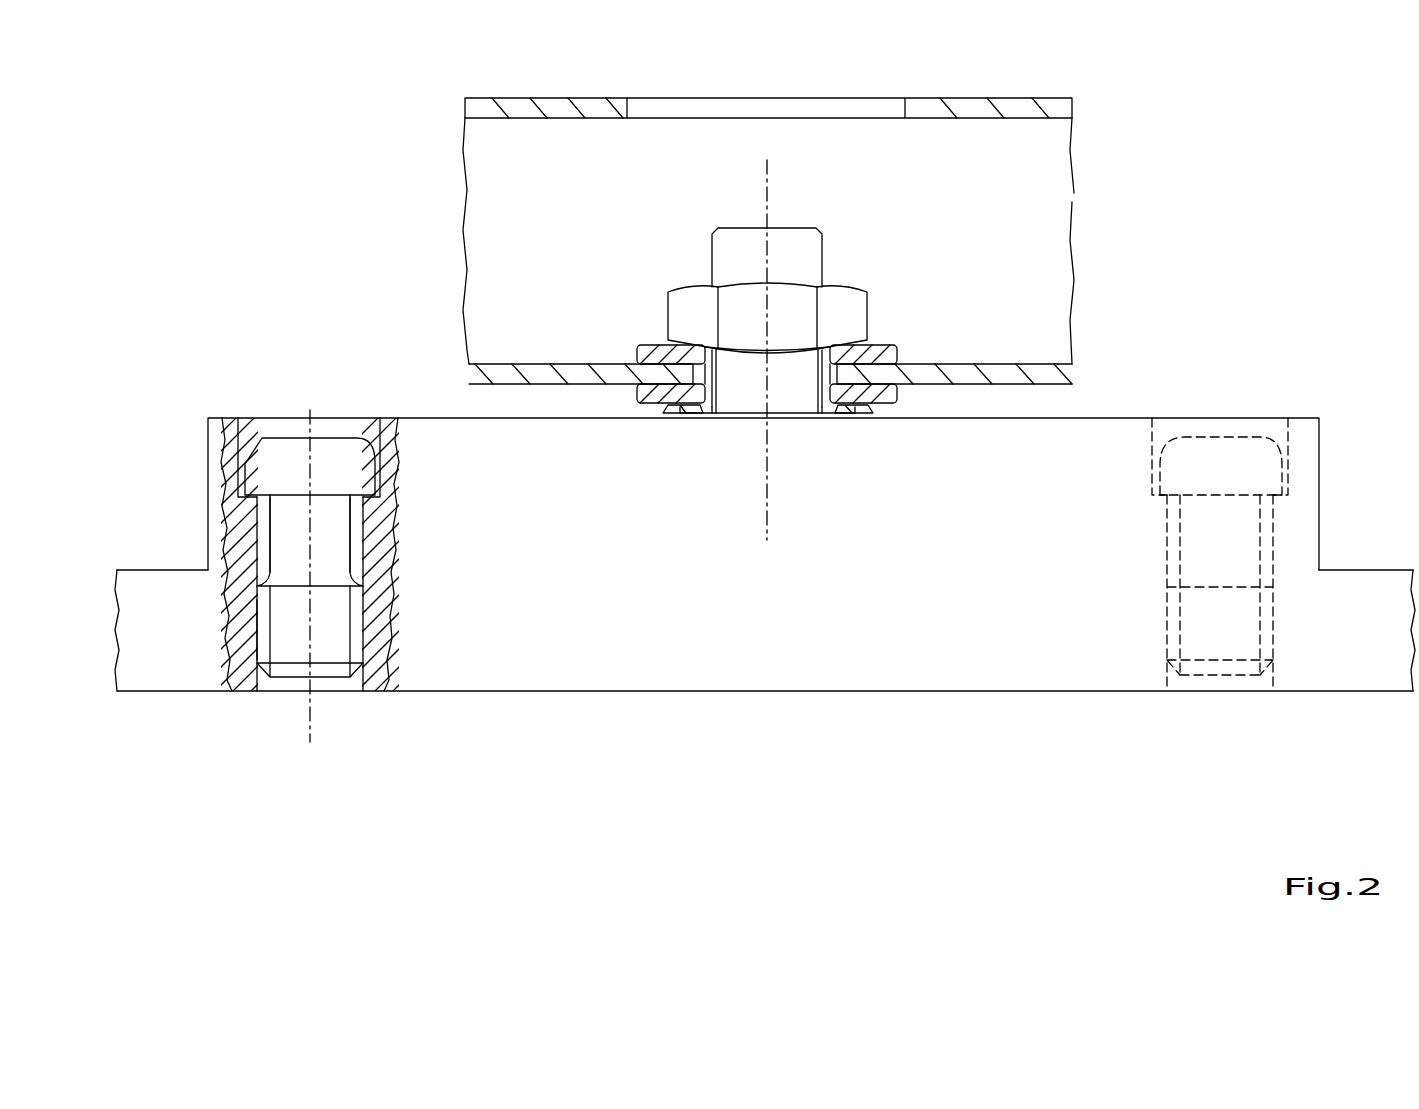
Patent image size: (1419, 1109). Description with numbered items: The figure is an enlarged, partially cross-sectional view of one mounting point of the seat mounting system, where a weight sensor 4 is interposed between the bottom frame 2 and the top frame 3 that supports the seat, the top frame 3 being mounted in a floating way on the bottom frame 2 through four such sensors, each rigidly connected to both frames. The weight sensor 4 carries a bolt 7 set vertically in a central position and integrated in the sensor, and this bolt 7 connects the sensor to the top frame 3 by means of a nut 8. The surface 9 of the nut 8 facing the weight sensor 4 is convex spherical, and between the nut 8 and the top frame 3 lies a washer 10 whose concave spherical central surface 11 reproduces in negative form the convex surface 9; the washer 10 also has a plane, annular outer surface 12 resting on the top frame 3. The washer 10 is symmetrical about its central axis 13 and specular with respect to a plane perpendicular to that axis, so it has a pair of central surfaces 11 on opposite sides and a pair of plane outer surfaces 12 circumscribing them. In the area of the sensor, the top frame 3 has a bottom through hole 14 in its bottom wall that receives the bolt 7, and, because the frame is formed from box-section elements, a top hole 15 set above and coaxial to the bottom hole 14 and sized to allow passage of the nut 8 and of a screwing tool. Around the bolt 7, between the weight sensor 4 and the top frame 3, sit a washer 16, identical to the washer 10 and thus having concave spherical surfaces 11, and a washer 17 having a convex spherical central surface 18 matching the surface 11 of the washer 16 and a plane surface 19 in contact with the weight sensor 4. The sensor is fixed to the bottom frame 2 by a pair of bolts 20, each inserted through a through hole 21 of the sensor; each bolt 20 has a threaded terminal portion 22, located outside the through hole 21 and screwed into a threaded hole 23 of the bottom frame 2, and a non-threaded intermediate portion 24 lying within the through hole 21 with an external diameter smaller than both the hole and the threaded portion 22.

The bottom frame 2 is at (1362, 533).
The top frame 3 is at (1113, 224).
The weight sensor 4 is at (1312, 440).
The bolt 7 is at (810, 257).
The nut 8 is at (668, 300).
The surface 9 is at (748, 362).
The washer 10 is at (887, 348).
The central surface 11 is at (845, 340).
The outer surface 12 is at (648, 342).
The central axis 13 is at (774, 200).
The bottom through hole 14 is at (702, 373).
The top hole 15 is at (899, 110).
The washer 16 is at (893, 396).
The washer 17 is at (863, 414).
The central surface 18 is at (873, 404).
The plane surface 19 is at (840, 423).
The bolt 20 is at (287, 448).
The through hole 21 is at (264, 547).
The threaded terminal portion 22 is at (333, 633).
The threaded hole 23 is at (263, 630).
The non-threaded intermediate portion 24 is at (332, 537).